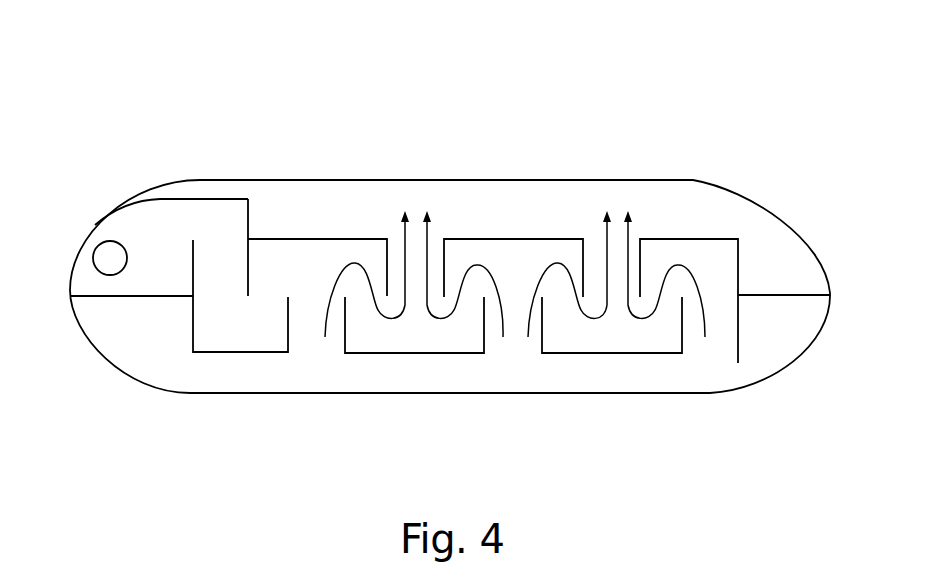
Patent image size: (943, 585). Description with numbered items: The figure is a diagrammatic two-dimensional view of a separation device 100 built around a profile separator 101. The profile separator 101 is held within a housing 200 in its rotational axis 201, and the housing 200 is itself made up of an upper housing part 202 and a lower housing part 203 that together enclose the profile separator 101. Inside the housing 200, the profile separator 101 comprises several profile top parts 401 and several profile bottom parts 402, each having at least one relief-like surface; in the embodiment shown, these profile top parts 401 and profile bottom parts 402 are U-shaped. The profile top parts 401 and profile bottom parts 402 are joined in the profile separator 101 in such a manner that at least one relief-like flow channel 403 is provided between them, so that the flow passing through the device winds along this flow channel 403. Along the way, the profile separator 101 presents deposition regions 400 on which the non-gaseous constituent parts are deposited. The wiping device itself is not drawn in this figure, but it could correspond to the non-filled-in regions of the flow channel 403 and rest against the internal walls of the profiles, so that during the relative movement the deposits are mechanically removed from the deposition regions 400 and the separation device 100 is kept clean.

The separation device 100 is at (698, 41).
The profile separator 101 is at (277, 237).
The housing 200 is at (688, 181).
The rotational axis 201 is at (110, 258).
The upper housing part 202 is at (795, 262).
The lower housing part 203 is at (168, 365).
The deposition regions 400 is at (712, 242).
The profile top parts 401 is at (370, 238).
The profile bottom parts 402 is at (240, 354).
The flow channel 403 is at (425, 331).